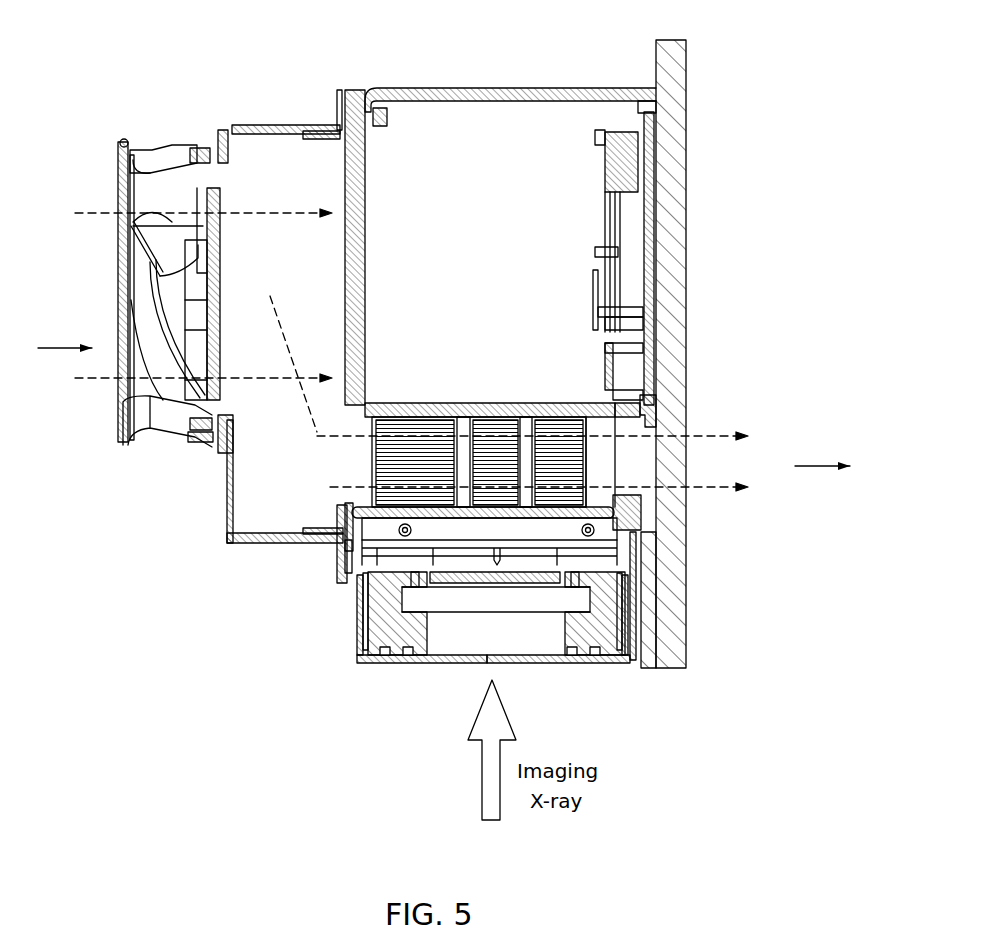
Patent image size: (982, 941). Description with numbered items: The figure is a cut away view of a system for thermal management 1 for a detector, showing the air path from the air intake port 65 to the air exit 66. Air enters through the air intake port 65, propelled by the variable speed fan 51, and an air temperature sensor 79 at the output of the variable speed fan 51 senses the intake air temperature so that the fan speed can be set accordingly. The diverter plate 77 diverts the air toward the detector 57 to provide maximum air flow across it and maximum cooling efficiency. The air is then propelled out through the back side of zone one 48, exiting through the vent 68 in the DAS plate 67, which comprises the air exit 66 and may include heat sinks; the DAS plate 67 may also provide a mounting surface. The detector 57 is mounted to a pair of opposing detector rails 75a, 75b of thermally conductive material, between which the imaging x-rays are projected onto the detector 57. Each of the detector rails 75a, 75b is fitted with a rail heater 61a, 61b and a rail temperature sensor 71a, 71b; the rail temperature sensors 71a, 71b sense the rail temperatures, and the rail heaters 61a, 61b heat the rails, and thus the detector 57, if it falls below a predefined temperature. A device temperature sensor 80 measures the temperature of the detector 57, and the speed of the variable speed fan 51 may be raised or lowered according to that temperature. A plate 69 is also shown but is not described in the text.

The system for thermal management 1 is at (152, 62).
The zone one 48 is at (493, 56).
The variable speed fan 51 is at (153, 278).
The detector 57 is at (327, 585).
The rail heater 61a is at (360, 615).
The rail heater 61b is at (645, 620).
The air intake port 65 is at (55, 347).
The air exit 66 is at (805, 466).
The DAS plate 67 is at (690, 312).
The vent 68 is at (688, 450).
The heat insulating plate 69 is at (361, 88).
The rail temperature sensor 71a is at (358, 635).
The rail temperature sensor 71b is at (628, 640).
The detector rail 75a is at (397, 664).
The detector rail 75b is at (597, 664).
The diverter plate 77 is at (340, 170).
The air temperature sensor 79 is at (220, 238).
The device temperature sensor 80 is at (685, 547).